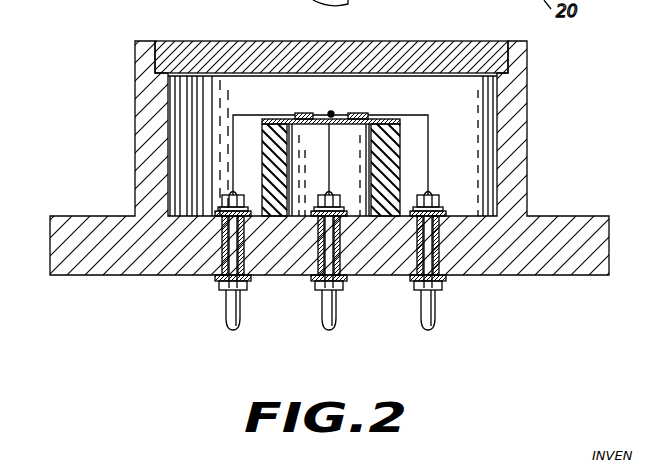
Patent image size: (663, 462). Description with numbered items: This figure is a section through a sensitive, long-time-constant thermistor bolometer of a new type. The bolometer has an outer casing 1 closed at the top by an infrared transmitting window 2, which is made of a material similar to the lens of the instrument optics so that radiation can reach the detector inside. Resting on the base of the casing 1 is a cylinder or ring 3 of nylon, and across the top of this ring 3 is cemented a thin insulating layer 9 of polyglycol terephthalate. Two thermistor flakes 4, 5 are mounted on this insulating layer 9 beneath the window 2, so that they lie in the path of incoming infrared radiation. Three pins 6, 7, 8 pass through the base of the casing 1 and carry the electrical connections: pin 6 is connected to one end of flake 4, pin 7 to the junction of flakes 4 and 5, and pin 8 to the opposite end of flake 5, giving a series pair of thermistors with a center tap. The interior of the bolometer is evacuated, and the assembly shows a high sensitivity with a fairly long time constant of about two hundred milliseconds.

The outer casing 1 is at (549, 216).
The infrared transmitting window 2 is at (266, 41).
The cylinder or ring 3 is at (398, 160).
The thermistor flake 4 is at (300, 112).
The thermistor flake 5 is at (356, 112).
The pin 6 is at (226, 311).
The pin 7 is at (322, 311).
The pin 8 is at (420, 311).
The thin insulating layer 9 is at (388, 118).